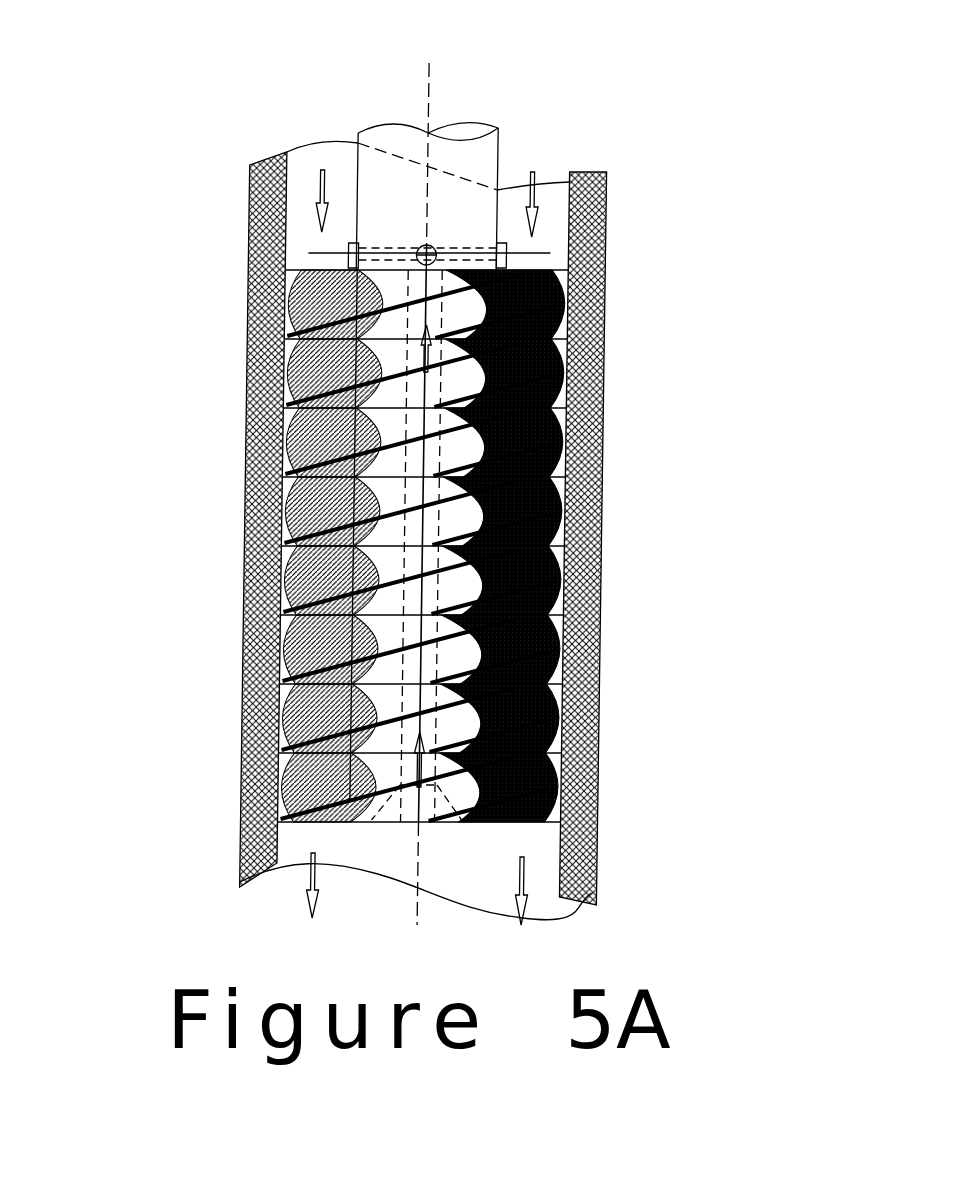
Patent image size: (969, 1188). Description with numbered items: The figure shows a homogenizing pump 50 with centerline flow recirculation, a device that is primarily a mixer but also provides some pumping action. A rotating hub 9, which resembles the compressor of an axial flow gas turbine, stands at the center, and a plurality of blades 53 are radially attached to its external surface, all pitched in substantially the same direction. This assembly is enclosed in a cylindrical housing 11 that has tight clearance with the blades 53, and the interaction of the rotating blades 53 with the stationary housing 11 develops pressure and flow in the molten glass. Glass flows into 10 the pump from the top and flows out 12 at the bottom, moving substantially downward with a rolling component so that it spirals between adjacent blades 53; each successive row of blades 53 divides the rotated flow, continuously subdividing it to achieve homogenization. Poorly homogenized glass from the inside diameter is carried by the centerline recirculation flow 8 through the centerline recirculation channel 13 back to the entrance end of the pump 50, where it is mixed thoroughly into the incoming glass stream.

The homogenizing pump 50 is at (435, 468).
The rotating hub 9 is at (502, 142).
The glass flow into the pump 10 is at (513, 210).
The cylindrical housing 11 is at (607, 383).
The centerline recirculation channel 13 is at (400, 575).
The centerline recirculation flow of glass 8 is at (560, 662).
The blades 53 is at (555, 545).
The glass flow out of the pump 12 is at (503, 892).